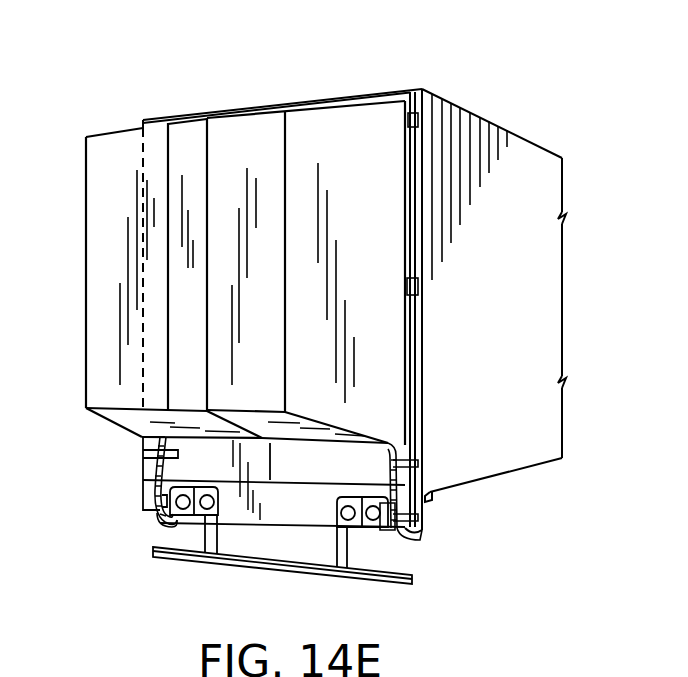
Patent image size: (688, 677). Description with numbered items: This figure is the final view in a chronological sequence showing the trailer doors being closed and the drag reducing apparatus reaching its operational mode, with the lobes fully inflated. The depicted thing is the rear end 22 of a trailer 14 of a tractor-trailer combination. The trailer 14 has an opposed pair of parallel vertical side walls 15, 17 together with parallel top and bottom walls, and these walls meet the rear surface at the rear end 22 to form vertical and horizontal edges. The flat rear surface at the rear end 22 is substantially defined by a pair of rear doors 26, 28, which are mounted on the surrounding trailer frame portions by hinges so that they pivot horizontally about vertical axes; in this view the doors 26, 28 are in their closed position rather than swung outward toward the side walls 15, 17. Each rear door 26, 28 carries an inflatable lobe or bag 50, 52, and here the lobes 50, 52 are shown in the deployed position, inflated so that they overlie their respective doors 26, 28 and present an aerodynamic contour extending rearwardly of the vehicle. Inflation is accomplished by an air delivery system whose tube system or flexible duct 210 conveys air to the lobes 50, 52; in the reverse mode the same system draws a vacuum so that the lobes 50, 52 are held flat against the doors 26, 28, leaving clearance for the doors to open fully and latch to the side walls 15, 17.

The trailer 14 is at (543, 103).
The side wall 15 is at (543, 317).
The side wall 17 is at (138, 438).
The rear end 22 is at (253, 538).
The rear door 26 is at (313, 472).
The rear door 28 is at (190, 463).
The inflatable lobe 50 is at (375, 363).
The inflatable lobe 52 is at (98, 355).
The flexible duct 210 is at (157, 522).